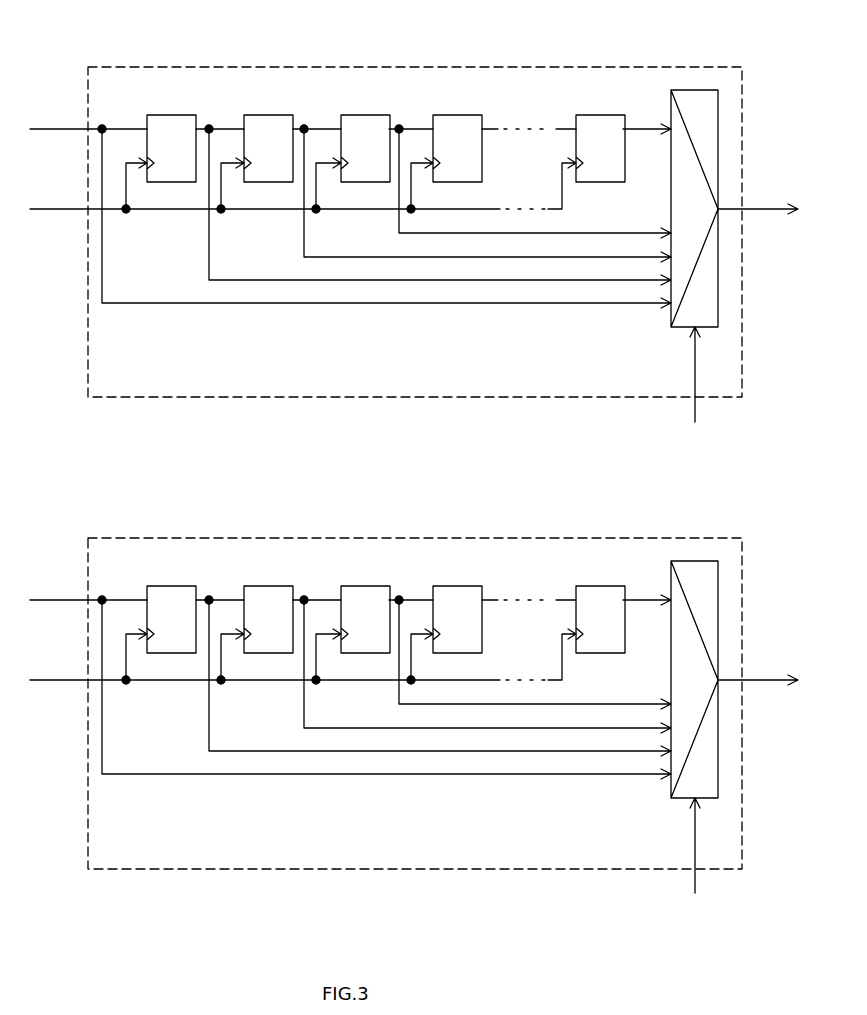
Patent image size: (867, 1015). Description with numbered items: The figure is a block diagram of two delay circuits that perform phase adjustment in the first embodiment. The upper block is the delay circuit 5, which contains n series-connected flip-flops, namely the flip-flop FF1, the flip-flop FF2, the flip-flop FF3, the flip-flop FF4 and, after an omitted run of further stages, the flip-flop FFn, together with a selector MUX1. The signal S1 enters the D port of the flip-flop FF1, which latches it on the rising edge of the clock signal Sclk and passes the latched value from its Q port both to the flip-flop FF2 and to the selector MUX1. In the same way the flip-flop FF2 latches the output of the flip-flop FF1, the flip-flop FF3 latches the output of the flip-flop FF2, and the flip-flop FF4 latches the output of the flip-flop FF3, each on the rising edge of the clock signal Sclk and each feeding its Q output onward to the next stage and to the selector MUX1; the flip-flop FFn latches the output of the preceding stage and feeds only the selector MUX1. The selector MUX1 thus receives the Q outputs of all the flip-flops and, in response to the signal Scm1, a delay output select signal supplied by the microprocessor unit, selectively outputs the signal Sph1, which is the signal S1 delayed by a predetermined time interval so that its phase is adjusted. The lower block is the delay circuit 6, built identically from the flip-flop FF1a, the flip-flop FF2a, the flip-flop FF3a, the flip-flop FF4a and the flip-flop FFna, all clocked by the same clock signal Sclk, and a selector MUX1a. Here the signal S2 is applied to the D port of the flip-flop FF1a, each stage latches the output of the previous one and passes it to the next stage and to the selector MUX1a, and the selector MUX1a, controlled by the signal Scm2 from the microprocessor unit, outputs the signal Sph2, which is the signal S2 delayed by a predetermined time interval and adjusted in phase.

The delay circuit 5 is at (618, 67).
The delay circuit 6 is at (598, 539).
The flip-flop FF1 is at (164, 115).
The flip-flop FF2 is at (262, 115).
The flip-flop FF3 is at (365, 115).
The flip-flop FF4 is at (457, 115).
The flip-flop FFn is at (595, 115).
The selector MUX1 is at (671, 327).
The flip-flop FF1a is at (180, 573).
The flip-flop FF2a is at (265, 586).
The flip-flop FF3a is at (357, 586).
The flip-flop FF4a is at (459, 586).
The flip-flop FFna is at (622, 574).
The selector MUX1a is at (671, 798).
The signal S1 is at (88, 117).
The signal S2 is at (88, 590).
The clock signal Sclk is at (303, 185).
The delay output signal Sph1 is at (758, 198).
The delay output signal Sph2 is at (758, 670).
The delay output select signal Scm1 is at (695, 387).
The delay output select signal Scm2 is at (695, 859).